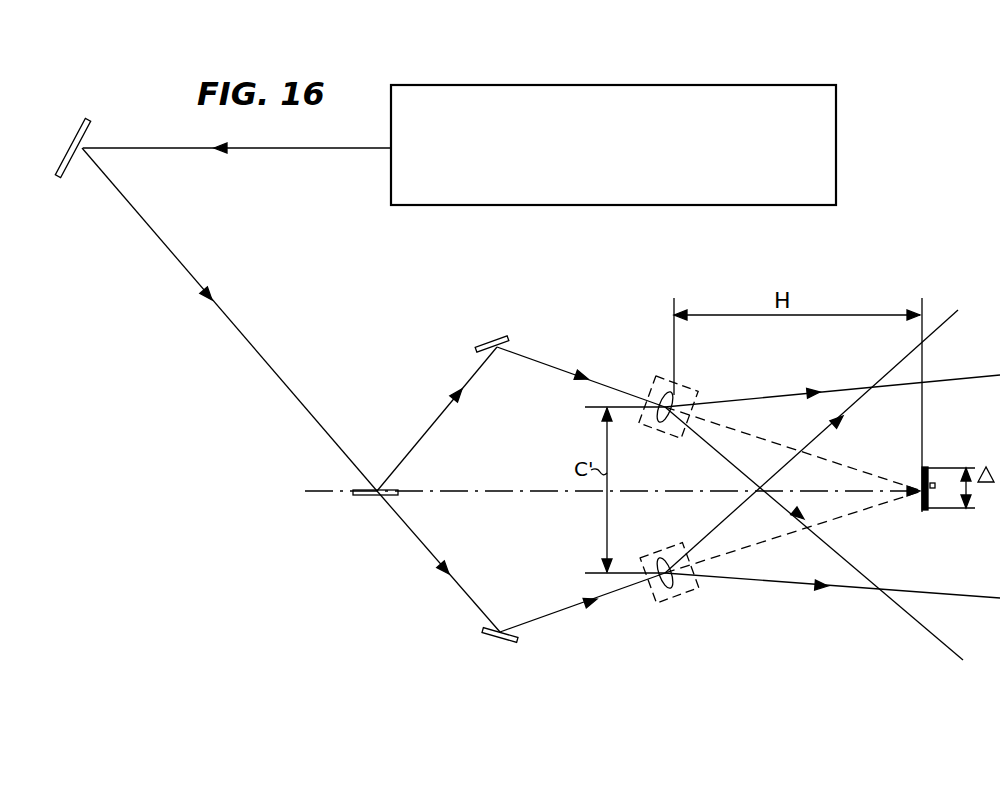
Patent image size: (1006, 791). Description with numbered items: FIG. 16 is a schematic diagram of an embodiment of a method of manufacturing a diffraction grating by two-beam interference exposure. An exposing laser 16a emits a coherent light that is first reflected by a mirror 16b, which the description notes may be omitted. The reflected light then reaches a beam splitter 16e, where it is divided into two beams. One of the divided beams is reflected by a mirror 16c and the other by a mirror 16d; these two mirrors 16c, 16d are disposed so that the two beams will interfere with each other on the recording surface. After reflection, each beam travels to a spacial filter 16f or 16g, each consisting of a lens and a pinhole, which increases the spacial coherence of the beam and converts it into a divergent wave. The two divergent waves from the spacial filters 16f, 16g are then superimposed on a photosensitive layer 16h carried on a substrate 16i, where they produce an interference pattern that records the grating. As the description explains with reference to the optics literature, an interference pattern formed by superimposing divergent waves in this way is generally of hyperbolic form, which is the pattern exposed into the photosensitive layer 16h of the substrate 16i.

The exposing laser 16a is at (822, 157).
The mirror 16b is at (88, 121).
The mirror 16c is at (507, 339).
The mirror 16d is at (516, 641).
The beam splitter 16e is at (373, 497).
The spacial filter 16f is at (695, 388).
The spacial filter 16g is at (672, 606).
The photosensitive layer 16h is at (923, 467).
The substrate 16i is at (928, 512).